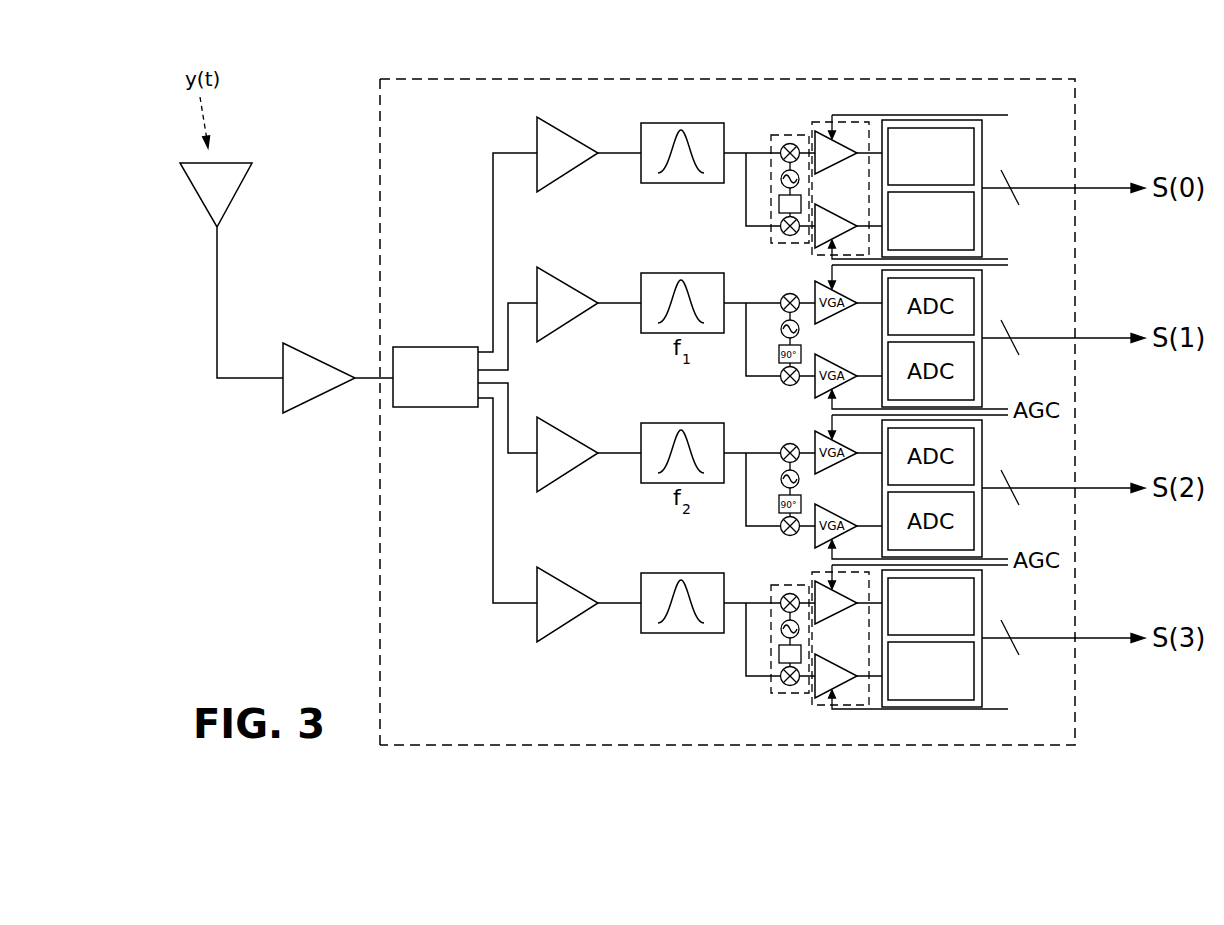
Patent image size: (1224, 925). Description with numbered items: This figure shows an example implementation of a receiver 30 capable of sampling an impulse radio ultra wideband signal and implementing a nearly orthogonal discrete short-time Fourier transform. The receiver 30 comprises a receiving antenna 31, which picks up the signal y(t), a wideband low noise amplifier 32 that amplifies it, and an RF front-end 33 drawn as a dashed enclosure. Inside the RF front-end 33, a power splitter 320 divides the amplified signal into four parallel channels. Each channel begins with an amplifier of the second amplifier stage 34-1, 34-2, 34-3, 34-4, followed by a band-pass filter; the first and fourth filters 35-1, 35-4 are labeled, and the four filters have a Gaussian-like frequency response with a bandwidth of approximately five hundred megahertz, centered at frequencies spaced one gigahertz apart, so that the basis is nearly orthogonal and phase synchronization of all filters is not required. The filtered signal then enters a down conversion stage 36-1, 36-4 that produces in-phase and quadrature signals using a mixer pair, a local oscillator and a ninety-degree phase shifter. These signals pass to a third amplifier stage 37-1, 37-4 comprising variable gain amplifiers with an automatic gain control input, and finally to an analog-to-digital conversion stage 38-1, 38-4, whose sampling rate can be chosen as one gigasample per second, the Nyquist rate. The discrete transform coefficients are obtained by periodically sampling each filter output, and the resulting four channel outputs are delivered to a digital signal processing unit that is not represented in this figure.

The receiver 30 is at (358, 142).
The receiving antenna 31 is at (197, 197).
The wideband low noise amplifier 32 is at (281, 407).
The power splitter 320 is at (435, 408).
The RF front-end 33 is at (380, 599).
The second amplifier stage 34-1 is at (567, 130).
The second amplifier stage 34-2 is at (569, 276).
The second amplifier stage 34-3 is at (569, 428).
The second amplifier stage 34-4 is at (569, 578).
The band-pass filter 35-1 is at (680, 128).
The band-pass filter 35-4 is at (640, 686).
The down conversion stage 36-1 is at (788, 132).
The down conversion stage 36-4 is at (777, 691).
The third amplifier stage 37-1 is at (847, 123).
The third amplifier stage 37-4 is at (936, 681).
The analog-to-digital conversion stage 38-1 is at (930, 118).
The analog-to-digital conversion stage 38-4 is at (948, 684).